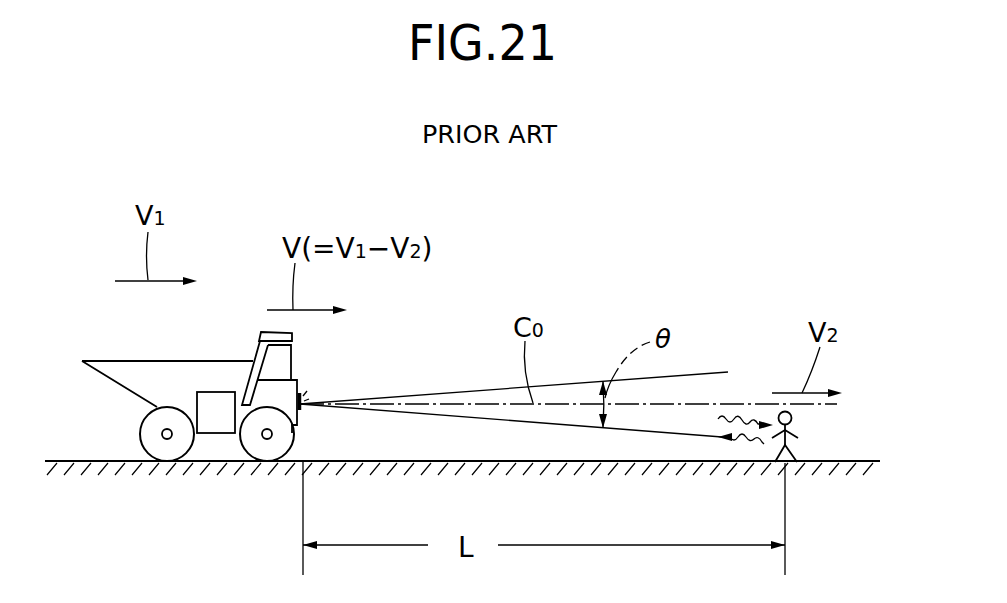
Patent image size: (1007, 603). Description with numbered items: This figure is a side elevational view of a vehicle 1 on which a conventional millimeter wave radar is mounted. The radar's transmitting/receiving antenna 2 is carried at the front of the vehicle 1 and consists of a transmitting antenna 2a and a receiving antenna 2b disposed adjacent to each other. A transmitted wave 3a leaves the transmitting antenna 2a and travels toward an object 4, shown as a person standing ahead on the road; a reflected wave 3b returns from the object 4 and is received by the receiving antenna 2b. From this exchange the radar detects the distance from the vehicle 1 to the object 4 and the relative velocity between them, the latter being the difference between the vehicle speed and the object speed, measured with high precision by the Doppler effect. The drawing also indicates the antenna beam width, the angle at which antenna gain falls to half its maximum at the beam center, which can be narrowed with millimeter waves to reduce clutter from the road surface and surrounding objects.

The vehicle 1 is at (214, 361).
The transmitting/receiving antenna 2 is at (372, 422).
The transmitting antenna 2a is at (354, 422).
The receiving antenna 2b is at (302, 410).
The transmitted wave 3a is at (750, 418).
The reflected wave 3b is at (744, 444).
The object 4 is at (792, 418).